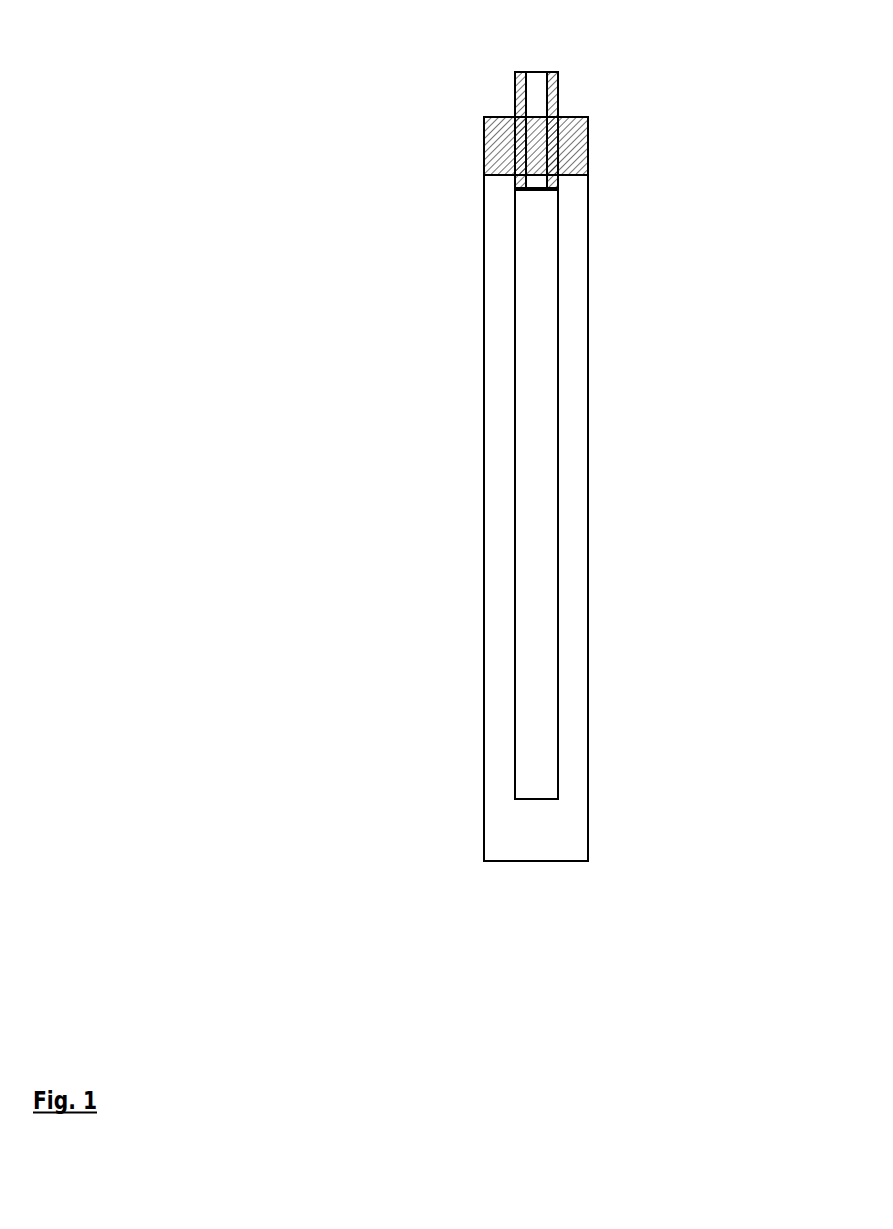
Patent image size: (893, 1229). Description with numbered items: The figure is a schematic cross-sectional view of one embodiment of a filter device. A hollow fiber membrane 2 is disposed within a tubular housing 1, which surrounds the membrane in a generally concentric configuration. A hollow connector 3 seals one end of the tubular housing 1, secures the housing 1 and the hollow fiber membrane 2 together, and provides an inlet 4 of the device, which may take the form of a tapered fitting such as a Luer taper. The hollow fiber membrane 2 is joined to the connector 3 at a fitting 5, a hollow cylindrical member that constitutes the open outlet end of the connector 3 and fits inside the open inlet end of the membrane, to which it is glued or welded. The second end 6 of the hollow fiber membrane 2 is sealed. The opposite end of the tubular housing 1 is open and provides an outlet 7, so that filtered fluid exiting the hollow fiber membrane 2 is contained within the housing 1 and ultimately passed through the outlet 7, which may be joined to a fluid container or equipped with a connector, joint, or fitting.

The tubular housing 1 is at (602, 267).
The hollow fiber membrane 2 is at (565, 388).
The connector 3 is at (598, 145).
The inlet 4 is at (570, 77).
The fitting 5 is at (503, 187).
The second end 6 is at (527, 811).
The outlet 7 is at (531, 873).